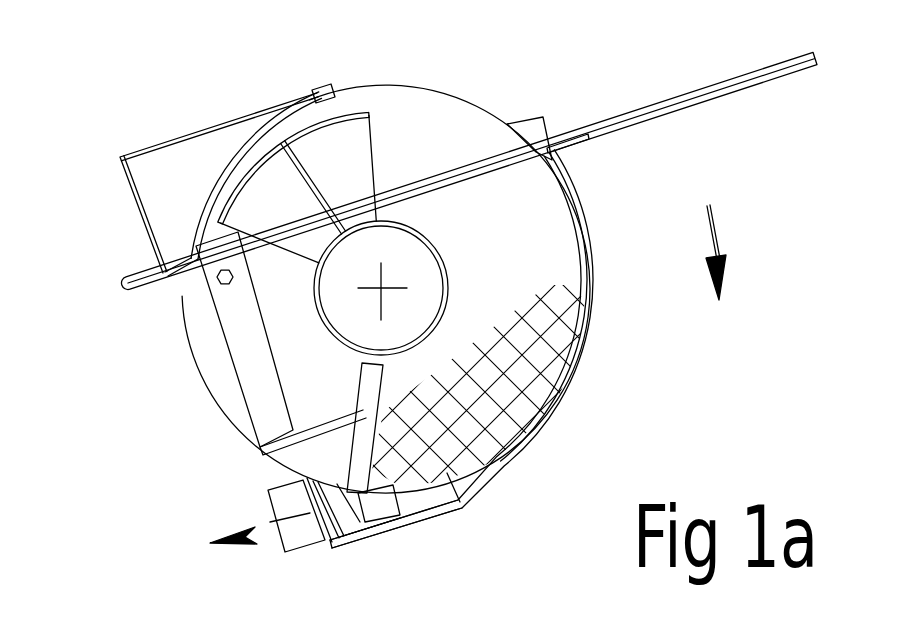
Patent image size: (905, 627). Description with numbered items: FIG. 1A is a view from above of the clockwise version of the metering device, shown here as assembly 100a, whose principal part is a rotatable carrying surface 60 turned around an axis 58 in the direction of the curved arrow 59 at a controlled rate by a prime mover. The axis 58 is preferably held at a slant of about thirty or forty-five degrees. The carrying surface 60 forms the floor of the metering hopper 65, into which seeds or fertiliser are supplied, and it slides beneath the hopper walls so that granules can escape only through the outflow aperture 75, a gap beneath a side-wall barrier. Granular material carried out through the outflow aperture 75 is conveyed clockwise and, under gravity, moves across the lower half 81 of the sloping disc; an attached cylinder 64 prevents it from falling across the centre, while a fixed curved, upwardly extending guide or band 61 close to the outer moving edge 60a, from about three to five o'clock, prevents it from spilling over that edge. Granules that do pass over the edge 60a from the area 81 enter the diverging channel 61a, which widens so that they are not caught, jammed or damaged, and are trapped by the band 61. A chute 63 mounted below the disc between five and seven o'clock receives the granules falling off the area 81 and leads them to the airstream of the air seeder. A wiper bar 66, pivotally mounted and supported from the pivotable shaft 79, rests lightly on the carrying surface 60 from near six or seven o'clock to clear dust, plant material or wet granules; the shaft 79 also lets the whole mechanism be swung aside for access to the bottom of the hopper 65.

The rotary cutting apparatus 100a is at (170, 32).
The axis 58 is at (388, 277).
The curved arrow 59 is at (720, 210).
The carrying surface 60 is at (433, 130).
The edge of the carrying surface 60a is at (487, 124).
The guide or band 61 is at (570, 190).
The diverging channel 61a is at (433, 500).
The chute 63 is at (390, 518).
The attached cylinder 64 is at (343, 320).
The metering hopper 65 is at (285, 212).
The wiper bar 66 is at (373, 463).
The outflow aperture 75 is at (343, 175).
The pivotable shaft 79 is at (673, 95).
The lower half of the disc 81 is at (493, 380).